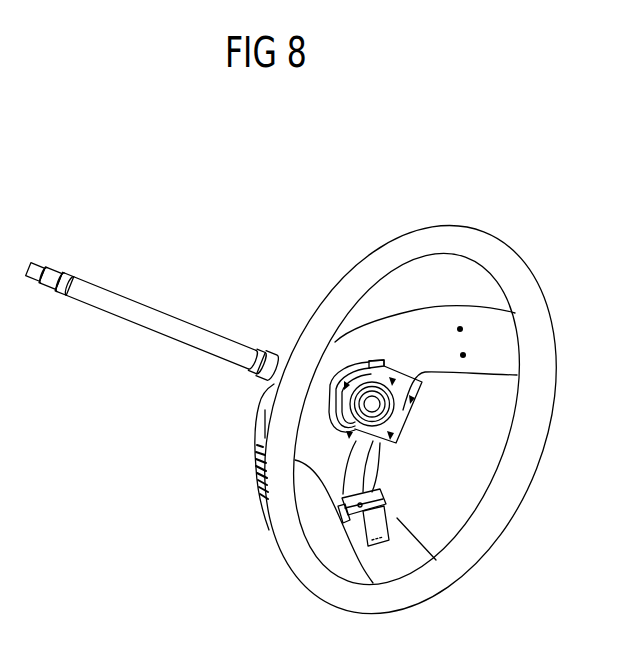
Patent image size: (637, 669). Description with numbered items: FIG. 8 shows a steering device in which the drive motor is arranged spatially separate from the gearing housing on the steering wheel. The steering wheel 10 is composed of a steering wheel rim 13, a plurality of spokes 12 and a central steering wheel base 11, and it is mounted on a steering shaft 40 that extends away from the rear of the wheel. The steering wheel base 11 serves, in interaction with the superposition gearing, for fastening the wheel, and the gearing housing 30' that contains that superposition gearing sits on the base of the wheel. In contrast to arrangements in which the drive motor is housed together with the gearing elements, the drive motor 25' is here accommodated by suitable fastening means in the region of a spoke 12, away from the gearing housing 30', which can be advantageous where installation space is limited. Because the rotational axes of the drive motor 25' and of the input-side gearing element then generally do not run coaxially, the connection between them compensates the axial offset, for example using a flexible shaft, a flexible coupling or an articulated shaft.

The steering wheel 10 is at (404, 416).
The steering wheel base 11 is at (305, 428).
The spoke 12 is at (402, 548).
The steering wheel rim 13 is at (540, 303).
The steering shaft 40 is at (172, 305).
The gearing housing 30' is at (410, 427).
The drive motor 25' is at (392, 509).